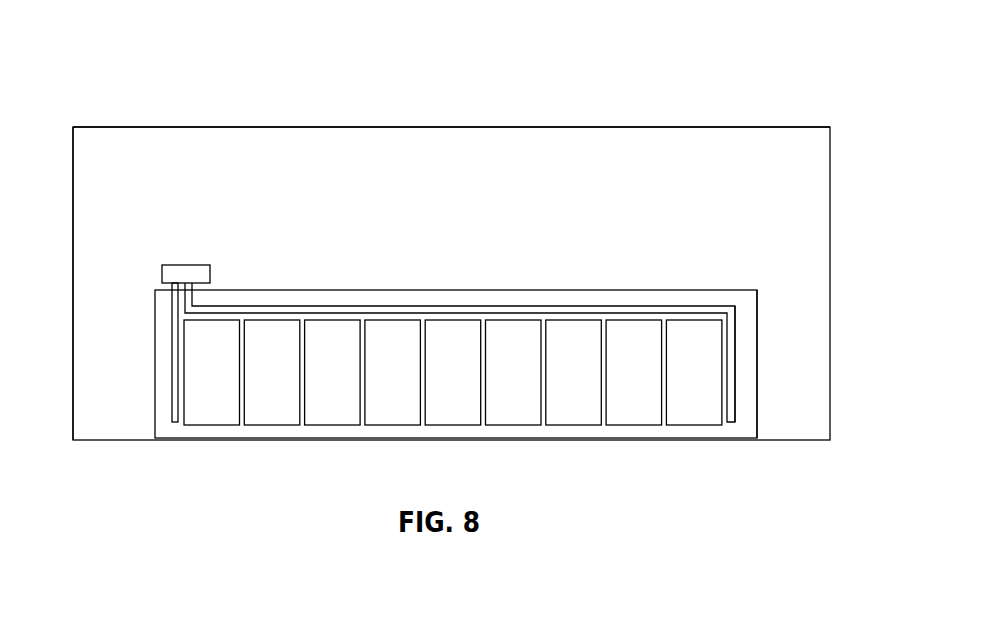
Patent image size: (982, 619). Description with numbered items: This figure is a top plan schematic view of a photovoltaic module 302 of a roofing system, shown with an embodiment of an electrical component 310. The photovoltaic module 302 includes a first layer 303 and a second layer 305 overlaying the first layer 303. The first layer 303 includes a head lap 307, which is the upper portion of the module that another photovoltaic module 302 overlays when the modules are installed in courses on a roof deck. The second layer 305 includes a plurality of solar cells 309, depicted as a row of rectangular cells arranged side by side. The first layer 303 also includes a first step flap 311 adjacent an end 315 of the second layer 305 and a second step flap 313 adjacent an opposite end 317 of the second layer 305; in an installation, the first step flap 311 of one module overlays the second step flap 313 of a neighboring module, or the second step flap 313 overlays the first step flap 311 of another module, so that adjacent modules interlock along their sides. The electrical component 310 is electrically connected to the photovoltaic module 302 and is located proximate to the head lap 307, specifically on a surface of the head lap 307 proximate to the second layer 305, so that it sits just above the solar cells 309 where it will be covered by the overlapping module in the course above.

The photovoltaic module 302 is at (410, 28).
The first layer 303 is at (652, 160).
The second layer 305 is at (702, 310).
The head lap 307 is at (284, 190).
The solar cell 309 is at (582, 377).
The electrical component 310 is at (187, 265).
The first step flap 311 is at (118, 378).
The second step flap 313 is at (787, 403).
The end of the second layer 315 is at (155, 328).
The opposite end of the second layer 317 is at (752, 317).